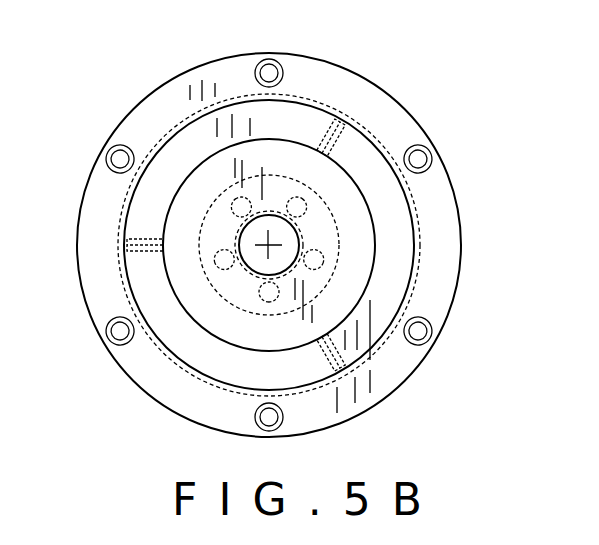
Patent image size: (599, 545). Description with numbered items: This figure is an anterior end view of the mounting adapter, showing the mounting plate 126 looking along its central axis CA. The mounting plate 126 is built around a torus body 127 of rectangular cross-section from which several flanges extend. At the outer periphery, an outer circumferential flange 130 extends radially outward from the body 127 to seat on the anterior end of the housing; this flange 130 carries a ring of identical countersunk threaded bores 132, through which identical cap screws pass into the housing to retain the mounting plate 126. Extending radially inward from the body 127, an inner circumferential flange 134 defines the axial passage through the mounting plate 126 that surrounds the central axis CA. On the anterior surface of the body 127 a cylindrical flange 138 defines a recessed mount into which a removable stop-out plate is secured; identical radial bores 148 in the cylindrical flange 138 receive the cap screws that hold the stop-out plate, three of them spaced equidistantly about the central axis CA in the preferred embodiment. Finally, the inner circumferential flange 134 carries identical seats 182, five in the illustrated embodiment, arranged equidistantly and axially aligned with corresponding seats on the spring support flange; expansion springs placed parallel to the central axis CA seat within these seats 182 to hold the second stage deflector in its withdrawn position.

The mounting plate 126 is at (168, 61).
The torus body 127 is at (173, 386).
The outer circumferential flange 130 is at (190, 314).
The countersunk threaded bores 132 is at (269, 73).
The inner circumferential flange 134 is at (218, 236).
The cylindrical flange 138 is at (212, 361).
The radial bores 148 is at (338, 136).
The seats 182 is at (294, 196).
The central axis CA is at (284, 239).